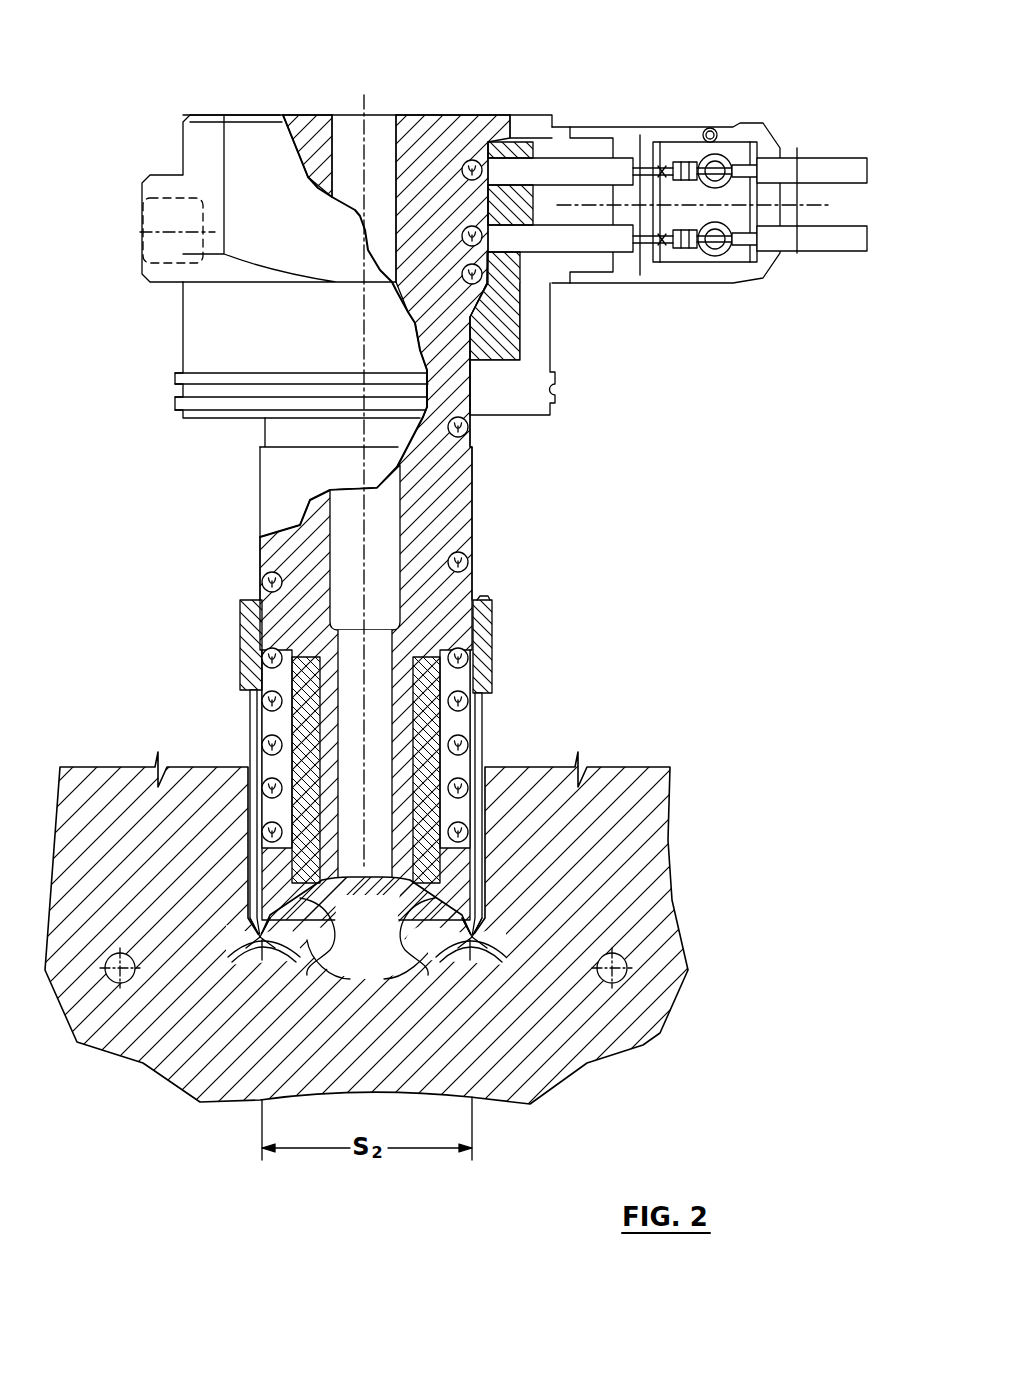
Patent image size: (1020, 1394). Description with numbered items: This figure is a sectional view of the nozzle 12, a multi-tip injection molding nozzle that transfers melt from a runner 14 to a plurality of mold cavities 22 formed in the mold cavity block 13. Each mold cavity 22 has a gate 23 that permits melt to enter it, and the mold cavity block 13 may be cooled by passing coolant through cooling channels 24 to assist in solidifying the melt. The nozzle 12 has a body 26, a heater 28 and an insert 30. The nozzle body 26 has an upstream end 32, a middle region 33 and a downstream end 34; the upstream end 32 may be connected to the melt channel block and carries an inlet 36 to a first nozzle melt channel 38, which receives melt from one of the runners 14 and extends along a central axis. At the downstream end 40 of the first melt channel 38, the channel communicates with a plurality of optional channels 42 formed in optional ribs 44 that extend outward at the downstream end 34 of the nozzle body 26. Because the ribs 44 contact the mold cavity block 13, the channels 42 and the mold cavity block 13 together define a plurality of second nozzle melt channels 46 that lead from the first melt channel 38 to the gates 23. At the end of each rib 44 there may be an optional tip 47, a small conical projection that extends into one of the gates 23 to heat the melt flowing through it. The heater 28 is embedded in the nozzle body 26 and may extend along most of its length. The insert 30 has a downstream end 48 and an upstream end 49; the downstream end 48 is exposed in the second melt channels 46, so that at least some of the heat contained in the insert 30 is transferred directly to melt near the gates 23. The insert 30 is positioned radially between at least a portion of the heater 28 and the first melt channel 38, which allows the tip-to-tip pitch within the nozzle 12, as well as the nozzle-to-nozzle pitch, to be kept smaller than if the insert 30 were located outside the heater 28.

The nozzle 12 is at (169, 623).
The mold cavity block 13 is at (668, 943).
The runner 14 is at (383, 113).
The mold cavities 22 is at (248, 955).
The gates 23 is at (167, 953).
The cooling channels 24 is at (113, 984).
The nozzle body 26 is at (477, 482).
The heater 28 is at (258, 702).
The insert 30 is at (487, 697).
The upstream end 32 is at (432, 99).
The middle region 33 is at (505, 656).
The downstream end 34 is at (504, 906).
The inlet 36 is at (350, 93).
The first nozzle melt channel 38 is at (388, 538).
The downstream end of the first melt channel 40 is at (484, 822).
The channels 42 is at (395, 942).
The ribs 44 is at (248, 884).
The second nozzle melt channels 46 is at (484, 842).
The tip 47 is at (398, 979).
The downstream end of the insert 48 is at (481, 852).
The upstream end of the insert 49 is at (489, 600).